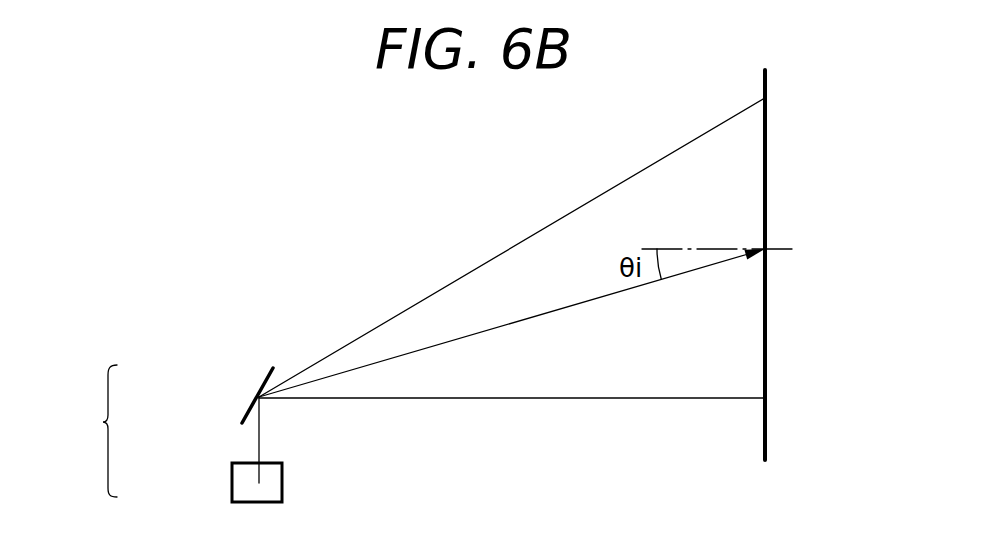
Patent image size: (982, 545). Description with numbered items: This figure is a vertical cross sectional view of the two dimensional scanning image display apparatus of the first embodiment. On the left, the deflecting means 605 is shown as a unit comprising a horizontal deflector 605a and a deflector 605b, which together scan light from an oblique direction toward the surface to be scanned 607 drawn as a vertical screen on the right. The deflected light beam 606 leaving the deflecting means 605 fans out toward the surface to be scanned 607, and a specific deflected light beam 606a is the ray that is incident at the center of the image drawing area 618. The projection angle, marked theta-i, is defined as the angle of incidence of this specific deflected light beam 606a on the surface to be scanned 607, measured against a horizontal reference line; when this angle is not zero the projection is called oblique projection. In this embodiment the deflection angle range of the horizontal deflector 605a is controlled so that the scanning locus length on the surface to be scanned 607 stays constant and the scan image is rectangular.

The deflecting means 605 is at (87, 431).
The horizontal deflector 605a is at (232, 477).
The vertical deflector 605b is at (262, 390).
The deflected light beam 606 is at (382, 322).
The specific deflected light beam 606a is at (512, 320).
The surface to be scanned 607 is at (767, 85).
The image drawing area 618 is at (767, 202).